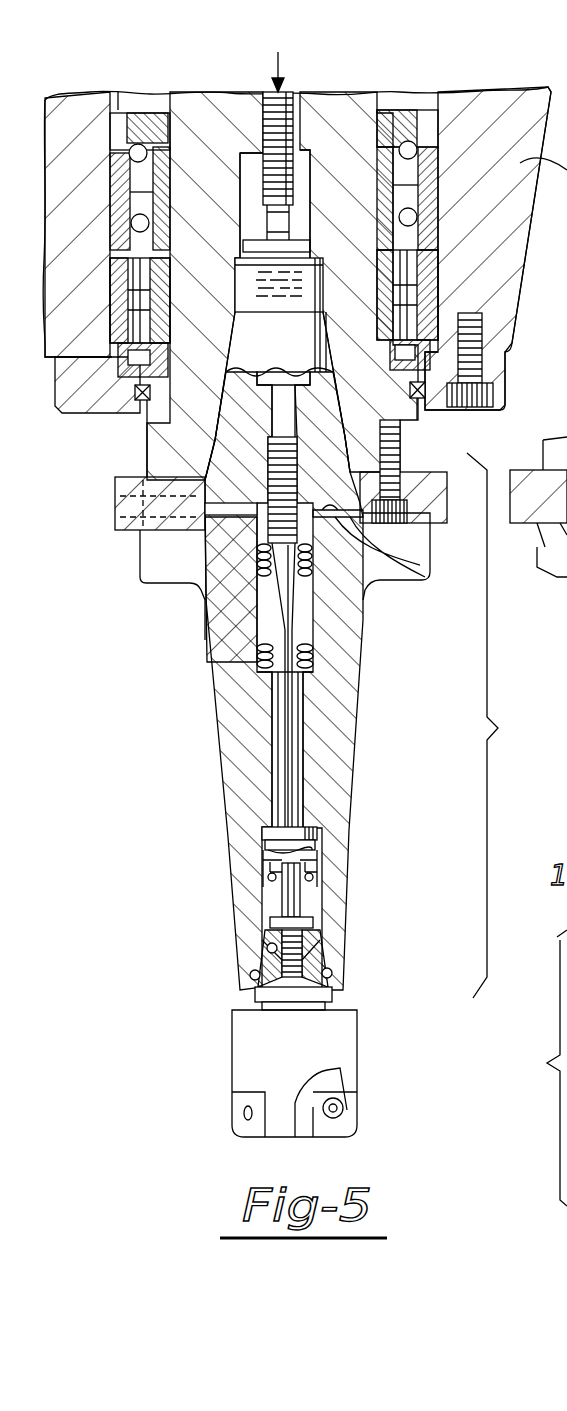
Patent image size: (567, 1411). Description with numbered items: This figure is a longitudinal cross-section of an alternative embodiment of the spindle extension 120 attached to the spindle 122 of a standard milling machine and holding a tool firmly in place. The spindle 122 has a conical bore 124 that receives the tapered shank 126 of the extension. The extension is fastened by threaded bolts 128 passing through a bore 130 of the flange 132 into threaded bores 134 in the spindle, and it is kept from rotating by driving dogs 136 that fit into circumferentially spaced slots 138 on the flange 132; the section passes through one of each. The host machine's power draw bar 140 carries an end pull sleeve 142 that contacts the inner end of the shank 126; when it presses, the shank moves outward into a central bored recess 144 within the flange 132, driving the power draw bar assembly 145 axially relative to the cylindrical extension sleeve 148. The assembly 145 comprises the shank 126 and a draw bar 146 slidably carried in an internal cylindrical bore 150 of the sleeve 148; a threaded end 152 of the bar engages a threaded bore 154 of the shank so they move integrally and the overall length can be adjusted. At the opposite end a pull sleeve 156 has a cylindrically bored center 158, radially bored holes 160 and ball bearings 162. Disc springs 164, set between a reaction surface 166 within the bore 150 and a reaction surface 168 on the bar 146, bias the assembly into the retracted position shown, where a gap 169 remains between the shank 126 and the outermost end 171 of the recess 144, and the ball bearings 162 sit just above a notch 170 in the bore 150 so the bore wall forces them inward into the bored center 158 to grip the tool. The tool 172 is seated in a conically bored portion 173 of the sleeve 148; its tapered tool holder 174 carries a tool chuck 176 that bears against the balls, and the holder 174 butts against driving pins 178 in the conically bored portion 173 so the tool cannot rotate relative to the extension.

The spindle extension 120 is at (508, 725).
The spindle 122 is at (165, 432).
The conical bore 124 is at (178, 447).
The tapered shank 126 is at (145, 425).
The threaded bolts 128 is at (417, 427).
The bore 130 is at (433, 538).
The flange 132 is at (117, 530).
The threaded bores 134 is at (400, 453).
The driving dogs 136 is at (162, 510).
The slots 138 is at (140, 552).
The power draw bar 140 is at (260, 150).
The pull sleeve 142 is at (252, 187).
The central bored recess 144 is at (410, 553).
The power draw bar assembly 145 is at (262, 731).
The draw bar 146 is at (287, 745).
The cylindrical extension sleeve 148 is at (243, 757).
The internal cylindrical bore 150 is at (302, 773).
The threaded end 152 is at (203, 593).
The threaded bore 154 is at (163, 583).
The pull sleeve 156 is at (273, 842).
The cylindrically bored center 158 is at (263, 870).
The radially bored holes 160 is at (323, 865).
The ball bearings 162 is at (320, 880).
The disc springs 164 is at (262, 668).
The reaction surface 166 is at (300, 700).
The reaction surface 168 is at (260, 663).
The gap 169 is at (420, 580).
The notch 170 is at (317, 888).
The outermost end 171 is at (385, 595).
The tool 172 is at (330, 1037).
The conically bored portion 173 is at (270, 952).
The tapered tool holder 174 is at (320, 945).
The tool chuck 176 is at (293, 907).
The driving pins 178 is at (253, 983).